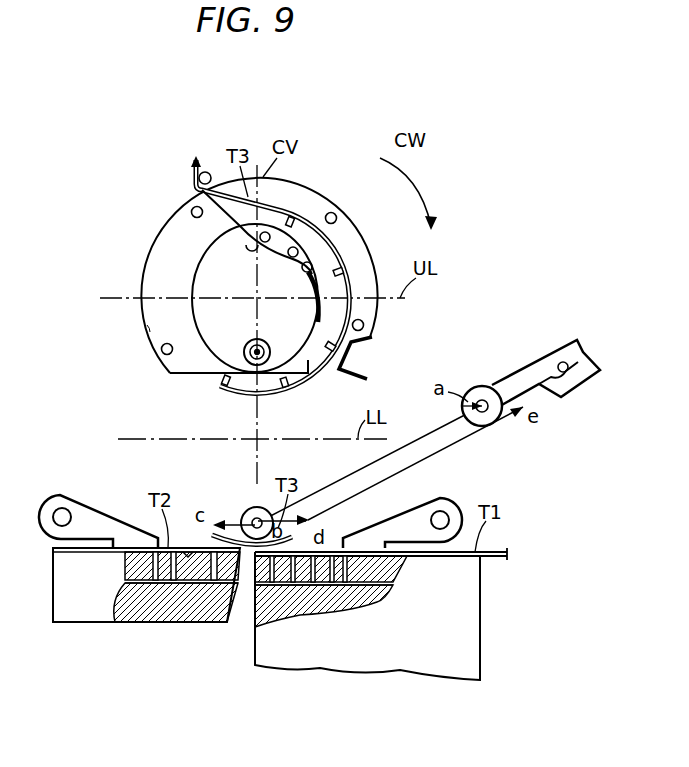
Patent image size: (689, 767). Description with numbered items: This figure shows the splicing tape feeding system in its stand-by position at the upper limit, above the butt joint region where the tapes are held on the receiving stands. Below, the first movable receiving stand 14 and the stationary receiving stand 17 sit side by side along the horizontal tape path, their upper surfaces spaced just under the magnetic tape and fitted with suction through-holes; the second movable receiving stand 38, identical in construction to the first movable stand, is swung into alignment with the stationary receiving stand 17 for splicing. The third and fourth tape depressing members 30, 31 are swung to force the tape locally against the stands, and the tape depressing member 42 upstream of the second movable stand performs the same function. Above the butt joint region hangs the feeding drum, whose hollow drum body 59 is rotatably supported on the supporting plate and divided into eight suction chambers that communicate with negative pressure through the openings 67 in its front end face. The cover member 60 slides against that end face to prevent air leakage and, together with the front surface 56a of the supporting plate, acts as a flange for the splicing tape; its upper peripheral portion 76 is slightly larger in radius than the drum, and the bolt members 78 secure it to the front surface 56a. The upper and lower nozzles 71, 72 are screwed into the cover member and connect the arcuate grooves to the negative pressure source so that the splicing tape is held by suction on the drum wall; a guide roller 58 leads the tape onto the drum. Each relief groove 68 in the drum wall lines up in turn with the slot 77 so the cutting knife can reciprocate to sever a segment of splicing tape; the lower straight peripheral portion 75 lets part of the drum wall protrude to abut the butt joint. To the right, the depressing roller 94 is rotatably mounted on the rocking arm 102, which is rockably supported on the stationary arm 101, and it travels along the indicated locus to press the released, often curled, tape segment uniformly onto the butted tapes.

The first movable receiving stand 14 is at (146, 608).
The second movable receiving stand 38 is at (152, 614).
The stationary receiving stand 17 is at (268, 668).
The third tape depressing member 30 is at (98, 499).
The tape depressing member 42 is at (85, 500).
The fourth tape depressing member 31 is at (415, 512).
The front surface of the supporting plate 56a is at (298, 192).
The guide roller 58 is at (208, 171).
The drum body 59 is at (327, 246).
The cover member 60 is at (153, 252).
The openings 67 is at (290, 258).
The relief groove 68 is at (294, 210).
The upper nozzle 71 is at (253, 251).
The lower nozzle 72 is at (250, 347).
The bottom flat portion of housing 75 is at (174, 374).
The upper peripheral portion 76 is at (147, 325).
The slot 77 is at (358, 352).
The bolt members 78 is at (190, 210).
The depressing roller 94 is at (475, 392).
The stationary arm 101 is at (560, 392).
The rocking arm 102 is at (519, 384).